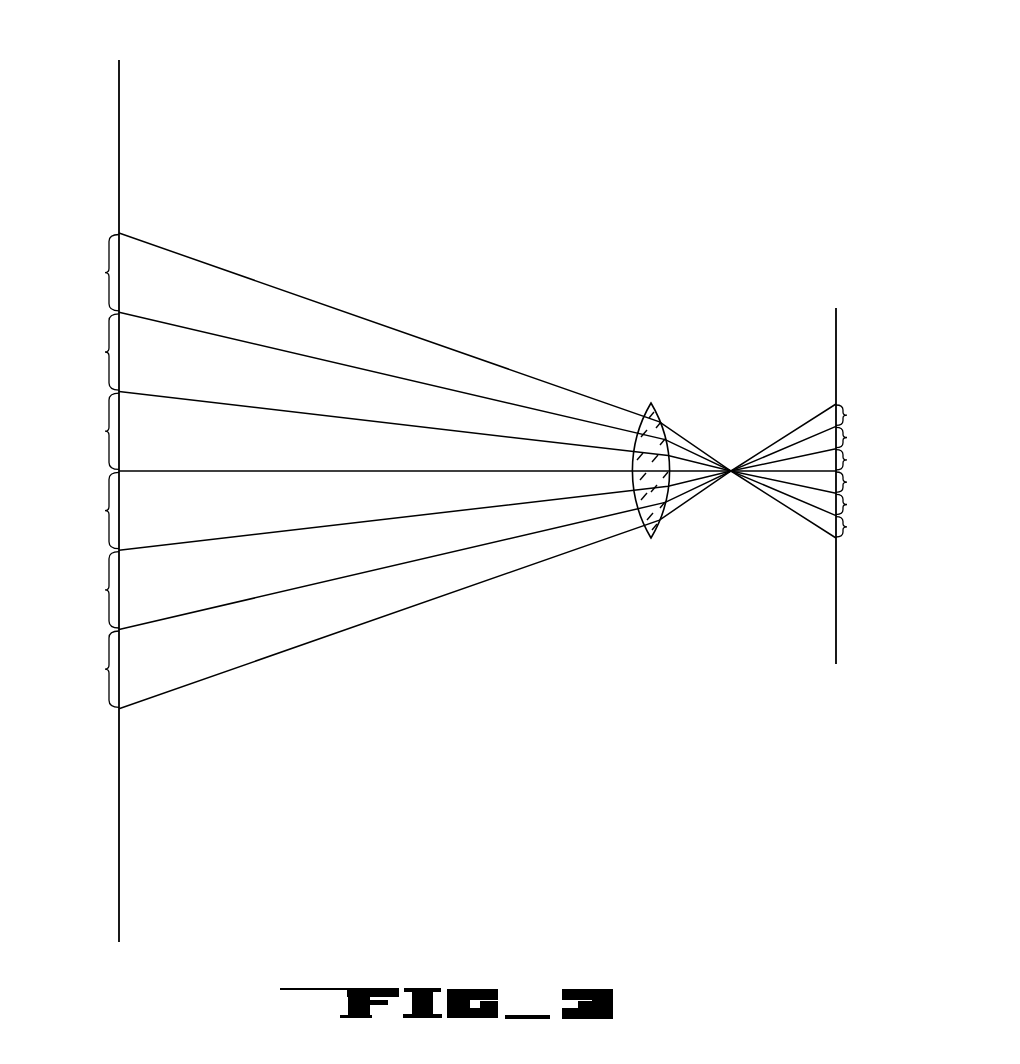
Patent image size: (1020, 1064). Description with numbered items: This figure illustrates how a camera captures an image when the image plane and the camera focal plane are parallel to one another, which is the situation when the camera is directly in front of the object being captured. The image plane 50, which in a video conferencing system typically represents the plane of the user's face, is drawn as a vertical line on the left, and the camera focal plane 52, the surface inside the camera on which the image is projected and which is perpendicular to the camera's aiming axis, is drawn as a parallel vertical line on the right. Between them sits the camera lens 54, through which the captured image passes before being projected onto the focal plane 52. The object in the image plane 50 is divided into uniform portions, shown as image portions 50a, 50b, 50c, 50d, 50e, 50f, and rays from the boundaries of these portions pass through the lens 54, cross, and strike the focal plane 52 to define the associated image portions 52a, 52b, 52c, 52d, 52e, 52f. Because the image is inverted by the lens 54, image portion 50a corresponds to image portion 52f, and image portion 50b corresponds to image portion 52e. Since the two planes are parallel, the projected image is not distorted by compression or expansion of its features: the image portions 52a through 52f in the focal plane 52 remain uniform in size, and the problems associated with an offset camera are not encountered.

The image plane 50 is at (119, 131).
The image portion 50a is at (105, 273).
The image portion 50b is at (105, 352).
The image portion 50c is at (105, 431).
The image portion 50d is at (105, 511).
The image portion 50e is at (105, 590).
The image portion 50f is at (105, 669).
The camera focal plane 52 is at (836, 348).
The image portion 52a is at (847, 415).
The image portion 52b is at (847, 438).
The image portion 52c is at (847, 460).
The image portion 52d is at (847, 482).
The image portion 52e is at (847, 504).
The image portion 52f is at (847, 527).
The camera lens 54 is at (645, 410).